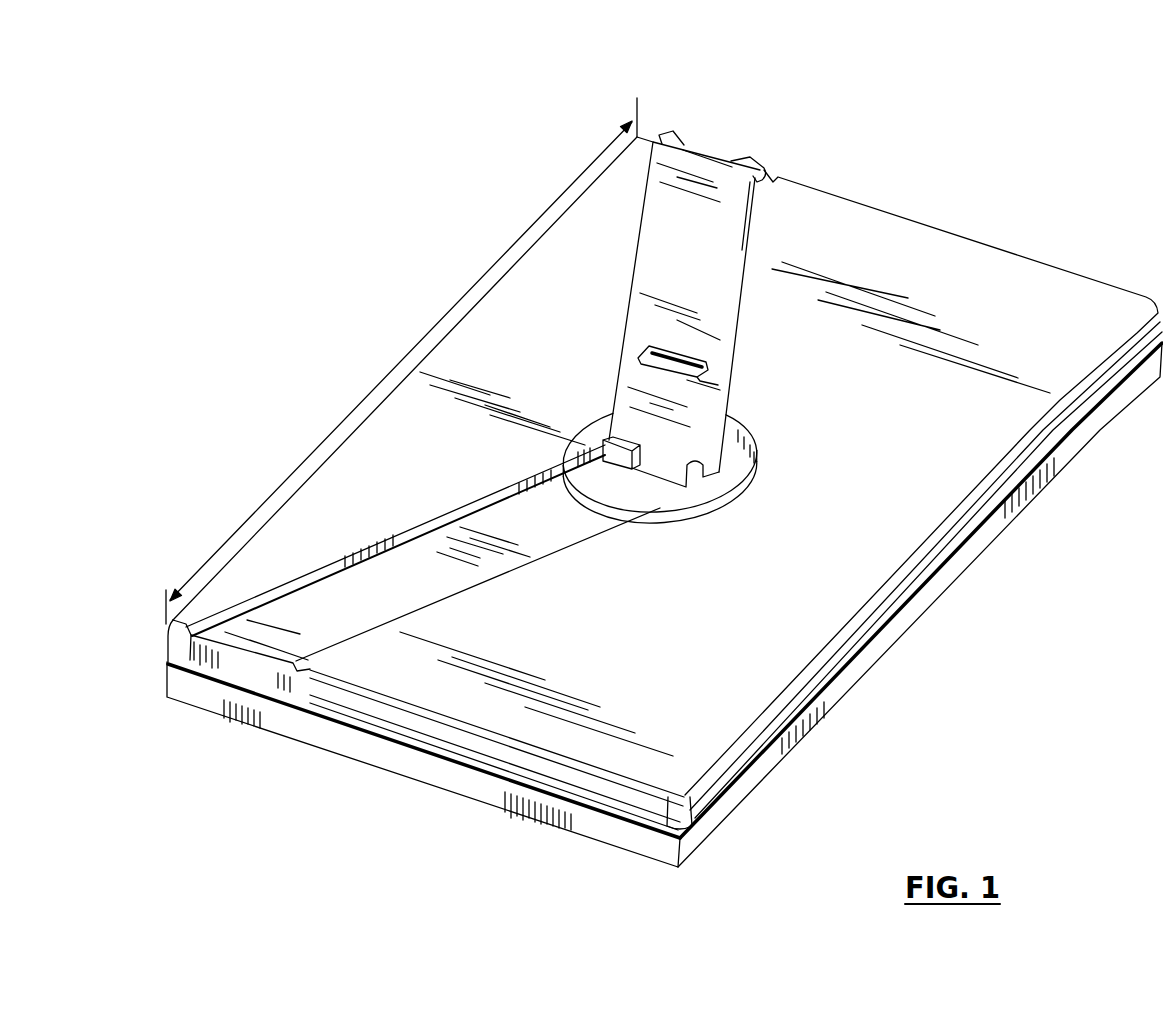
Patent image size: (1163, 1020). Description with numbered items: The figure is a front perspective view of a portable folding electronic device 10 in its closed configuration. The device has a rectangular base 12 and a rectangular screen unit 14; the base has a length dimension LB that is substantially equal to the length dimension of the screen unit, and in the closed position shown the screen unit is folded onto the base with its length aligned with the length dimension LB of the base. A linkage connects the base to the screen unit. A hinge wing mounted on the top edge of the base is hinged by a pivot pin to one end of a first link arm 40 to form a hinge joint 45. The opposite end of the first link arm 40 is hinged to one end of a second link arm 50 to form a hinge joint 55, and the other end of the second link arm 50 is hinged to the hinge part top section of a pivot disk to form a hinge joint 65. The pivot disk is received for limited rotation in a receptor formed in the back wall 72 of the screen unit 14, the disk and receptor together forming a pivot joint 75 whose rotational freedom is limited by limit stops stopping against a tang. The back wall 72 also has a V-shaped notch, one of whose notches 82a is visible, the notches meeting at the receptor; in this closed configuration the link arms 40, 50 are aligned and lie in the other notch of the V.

The portable folding electronic device 10 is at (806, 120).
The base 12 is at (392, 763).
The screen unit 14 is at (990, 270).
The first link arm 40 is at (723, 243).
The hinge joint 45 is at (654, 124).
The second link arm 50 is at (710, 405).
The hinge joint 55 is at (670, 340).
The hinge joint 65 is at (628, 480).
The back wall 72 is at (853, 516).
The pivot joint 75 is at (546, 466).
The notch 82a is at (397, 573).
The length dimension of the base LB is at (401, 361).